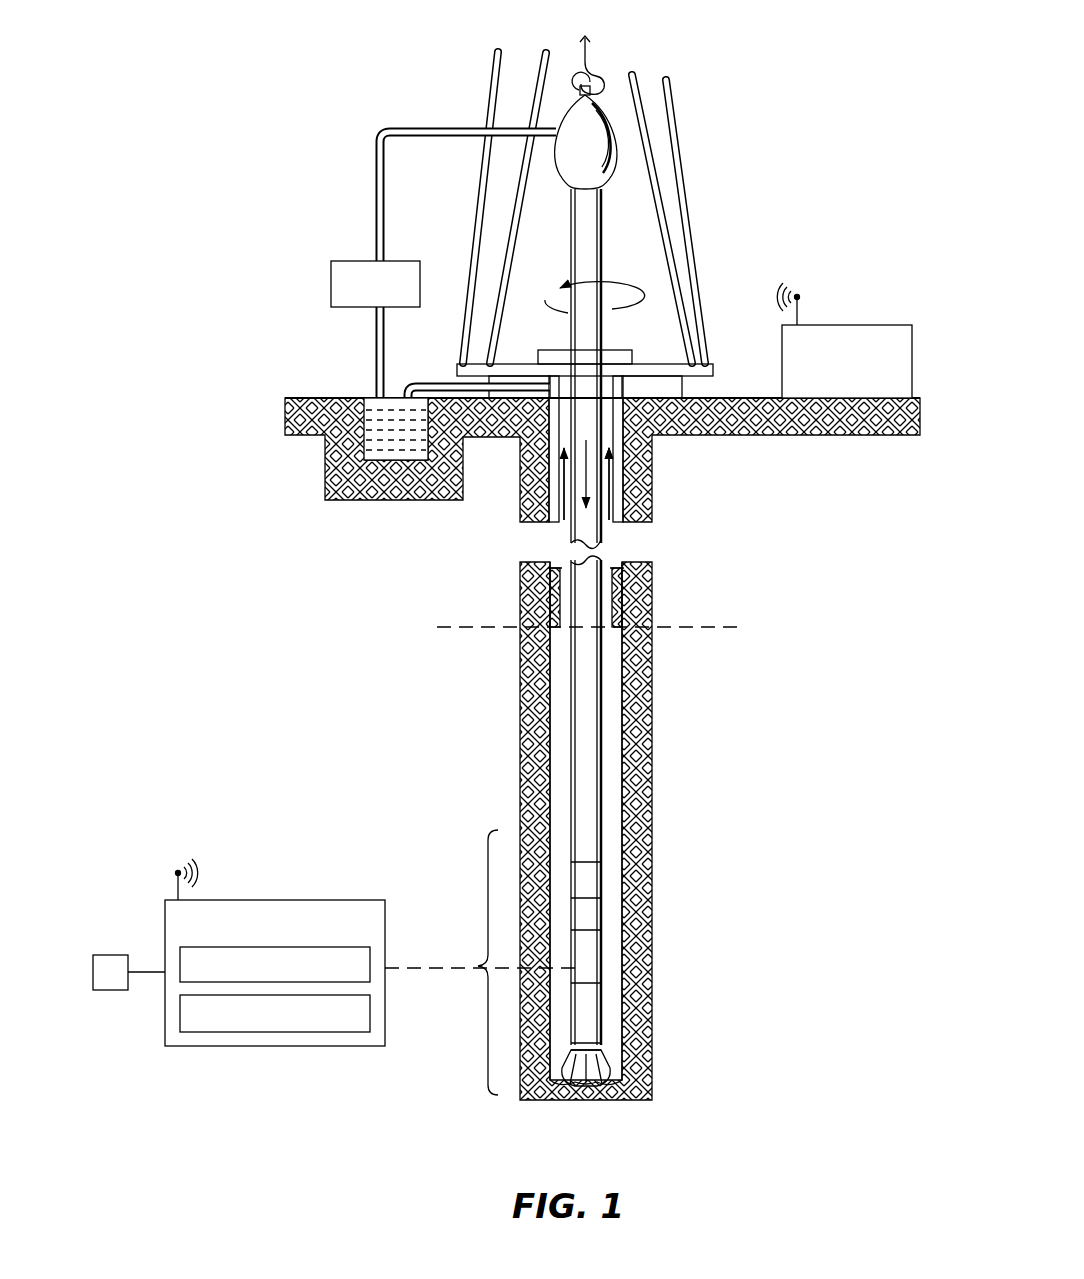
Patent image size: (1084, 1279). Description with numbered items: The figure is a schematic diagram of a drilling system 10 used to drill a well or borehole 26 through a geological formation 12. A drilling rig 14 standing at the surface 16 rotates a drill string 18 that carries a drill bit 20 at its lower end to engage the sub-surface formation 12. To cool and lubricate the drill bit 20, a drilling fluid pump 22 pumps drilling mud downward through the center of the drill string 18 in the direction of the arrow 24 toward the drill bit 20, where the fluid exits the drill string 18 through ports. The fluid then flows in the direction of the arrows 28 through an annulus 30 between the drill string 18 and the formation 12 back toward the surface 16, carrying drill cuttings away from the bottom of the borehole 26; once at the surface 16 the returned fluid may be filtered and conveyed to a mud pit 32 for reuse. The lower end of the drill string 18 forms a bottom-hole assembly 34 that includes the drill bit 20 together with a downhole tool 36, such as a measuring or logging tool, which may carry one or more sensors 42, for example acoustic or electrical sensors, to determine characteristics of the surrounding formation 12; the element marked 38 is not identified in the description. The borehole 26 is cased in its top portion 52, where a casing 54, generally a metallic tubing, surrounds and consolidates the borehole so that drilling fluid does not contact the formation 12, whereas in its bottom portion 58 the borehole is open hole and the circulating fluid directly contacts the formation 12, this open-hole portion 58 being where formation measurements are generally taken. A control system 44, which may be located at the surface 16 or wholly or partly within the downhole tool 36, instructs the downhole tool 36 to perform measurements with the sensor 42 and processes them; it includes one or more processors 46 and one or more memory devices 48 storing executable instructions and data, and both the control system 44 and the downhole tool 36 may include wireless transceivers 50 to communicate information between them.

The drilling system 10 is at (722, 66).
The geological formation 12 is at (788, 767).
The drilling rig 14 is at (697, 148).
The surface 16 is at (760, 396).
The drill string 18 is at (585, 390).
The drill bit 20 is at (592, 1070).
The drilling fluid pump 22 is at (348, 307).
The arrow 24 is at (575, 525).
The borehole 26 is at (550, 720).
The arrows 28 is at (560, 480).
The annulus 30 is at (600, 392).
The mud pit 32 is at (395, 462).
The bottom-hole assembly 34 is at (475, 962).
The downhole tool 36 is at (588, 878).
The downhole sensor 38 is at (588, 966).
The sensor 42 is at (110, 955).
The control system 44 is at (893, 325).
The processor 46 is at (372, 962).
The memory device 48 is at (372, 1013).
The wireless transceiver 50 is at (797, 297).
The top portion of the borehole 52 is at (637, 618).
The casing 54 is at (556, 575).
The bottom portion of the borehole 58 is at (615, 672).